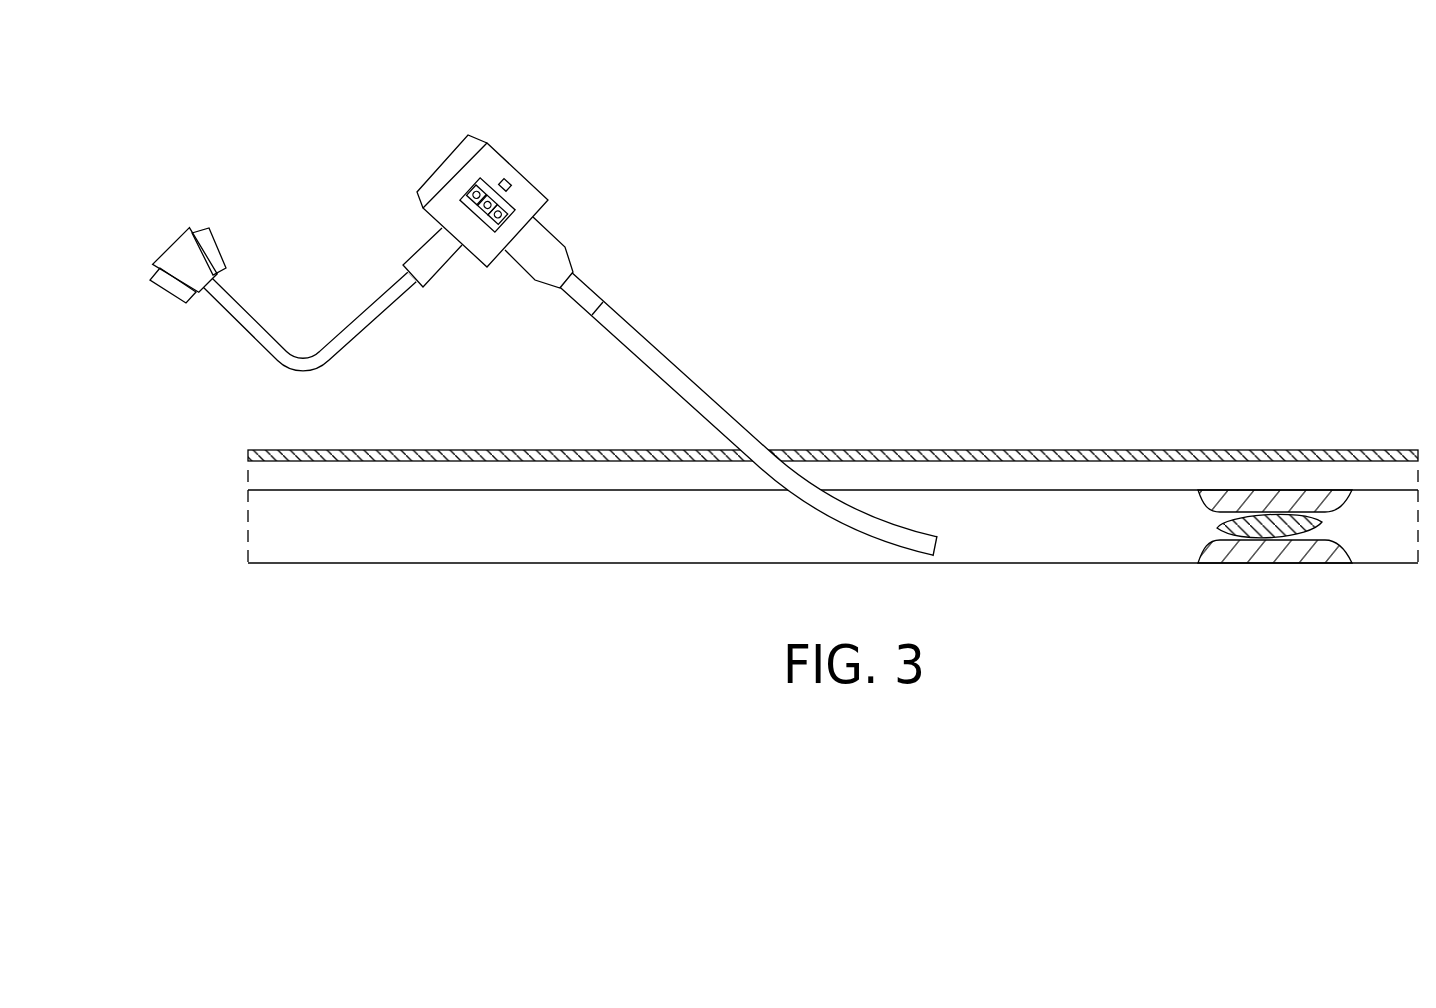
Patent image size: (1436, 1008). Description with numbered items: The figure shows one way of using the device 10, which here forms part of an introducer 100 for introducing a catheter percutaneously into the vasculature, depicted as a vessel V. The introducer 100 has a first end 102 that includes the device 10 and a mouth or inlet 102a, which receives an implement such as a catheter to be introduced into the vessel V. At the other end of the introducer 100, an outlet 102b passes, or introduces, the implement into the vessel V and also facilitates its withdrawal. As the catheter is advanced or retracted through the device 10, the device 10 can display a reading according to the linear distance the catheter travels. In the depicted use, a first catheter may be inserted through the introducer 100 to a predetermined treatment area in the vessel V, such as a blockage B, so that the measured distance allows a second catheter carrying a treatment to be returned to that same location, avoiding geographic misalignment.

The device 10 is at (522, 176).
The introducer 100 is at (617, 263).
The first end 102 is at (773, 294).
The mouth or inlet 102a is at (306, 224).
The outlet 102b is at (952, 522).
The vessel V is at (483, 563).
The blockage B is at (1285, 540).